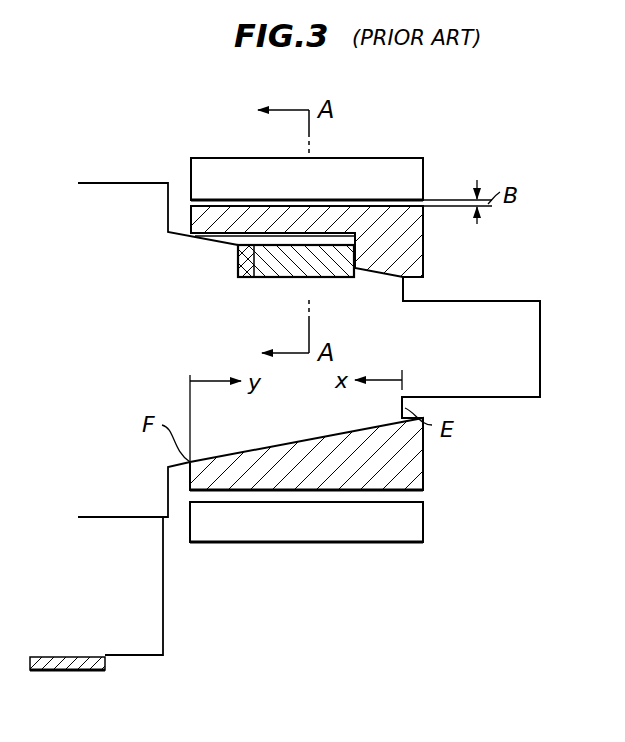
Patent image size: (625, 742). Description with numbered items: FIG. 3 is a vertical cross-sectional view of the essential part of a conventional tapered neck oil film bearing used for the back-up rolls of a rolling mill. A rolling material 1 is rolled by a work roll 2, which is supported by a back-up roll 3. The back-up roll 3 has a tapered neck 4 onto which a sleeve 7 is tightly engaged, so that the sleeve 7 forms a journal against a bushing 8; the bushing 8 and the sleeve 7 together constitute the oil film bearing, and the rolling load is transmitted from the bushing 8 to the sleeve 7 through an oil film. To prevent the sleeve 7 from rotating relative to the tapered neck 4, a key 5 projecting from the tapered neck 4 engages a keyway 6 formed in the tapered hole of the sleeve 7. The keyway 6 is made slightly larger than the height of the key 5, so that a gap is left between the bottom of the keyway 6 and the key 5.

The rolling material 1 is at (105, 665).
The work roll 2 is at (150, 572).
The back-up roll 3 is at (150, 153).
The tapered neck 4 is at (373, 352).
The key 5 is at (272, 276).
The keyway 6 is at (240, 274).
The sleeve 7 is at (426, 259).
The bushing 8 is at (383, 165).